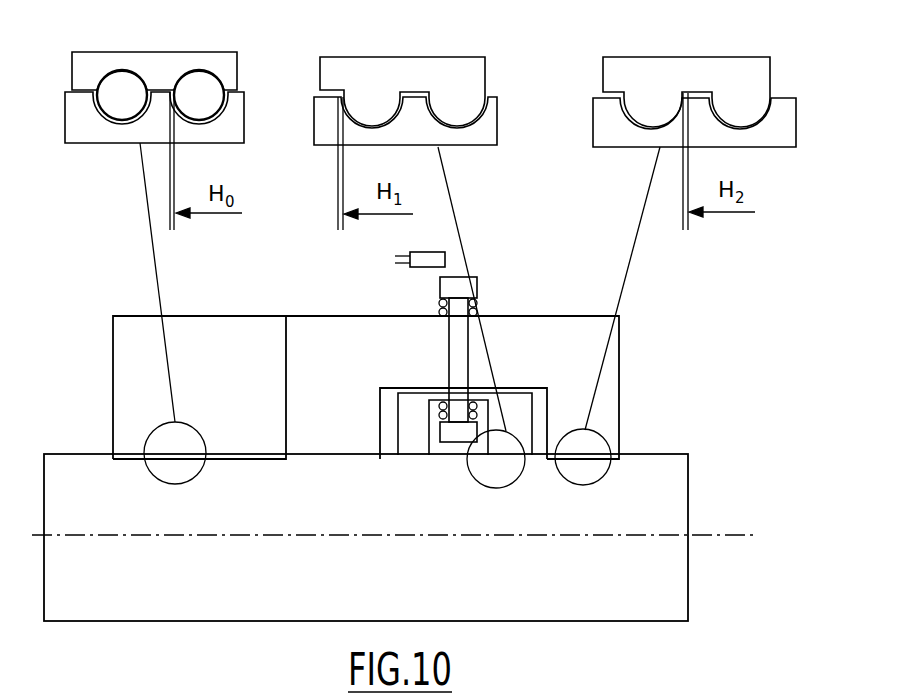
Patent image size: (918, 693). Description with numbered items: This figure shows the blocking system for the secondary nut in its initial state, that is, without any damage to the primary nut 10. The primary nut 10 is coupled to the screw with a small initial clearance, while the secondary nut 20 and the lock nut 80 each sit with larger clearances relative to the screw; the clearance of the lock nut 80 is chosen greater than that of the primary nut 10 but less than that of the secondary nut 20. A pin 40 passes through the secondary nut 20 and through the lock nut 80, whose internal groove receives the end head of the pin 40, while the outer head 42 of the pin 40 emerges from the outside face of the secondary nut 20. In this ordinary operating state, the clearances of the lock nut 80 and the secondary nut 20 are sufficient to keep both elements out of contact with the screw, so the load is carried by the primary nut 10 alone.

The primary nut 10 is at (135, 362).
The secondary nut 20 is at (607, 408).
The pin 40 is at (462, 343).
The outer head 42 is at (447, 283).
The lock nut 80 is at (432, 254).